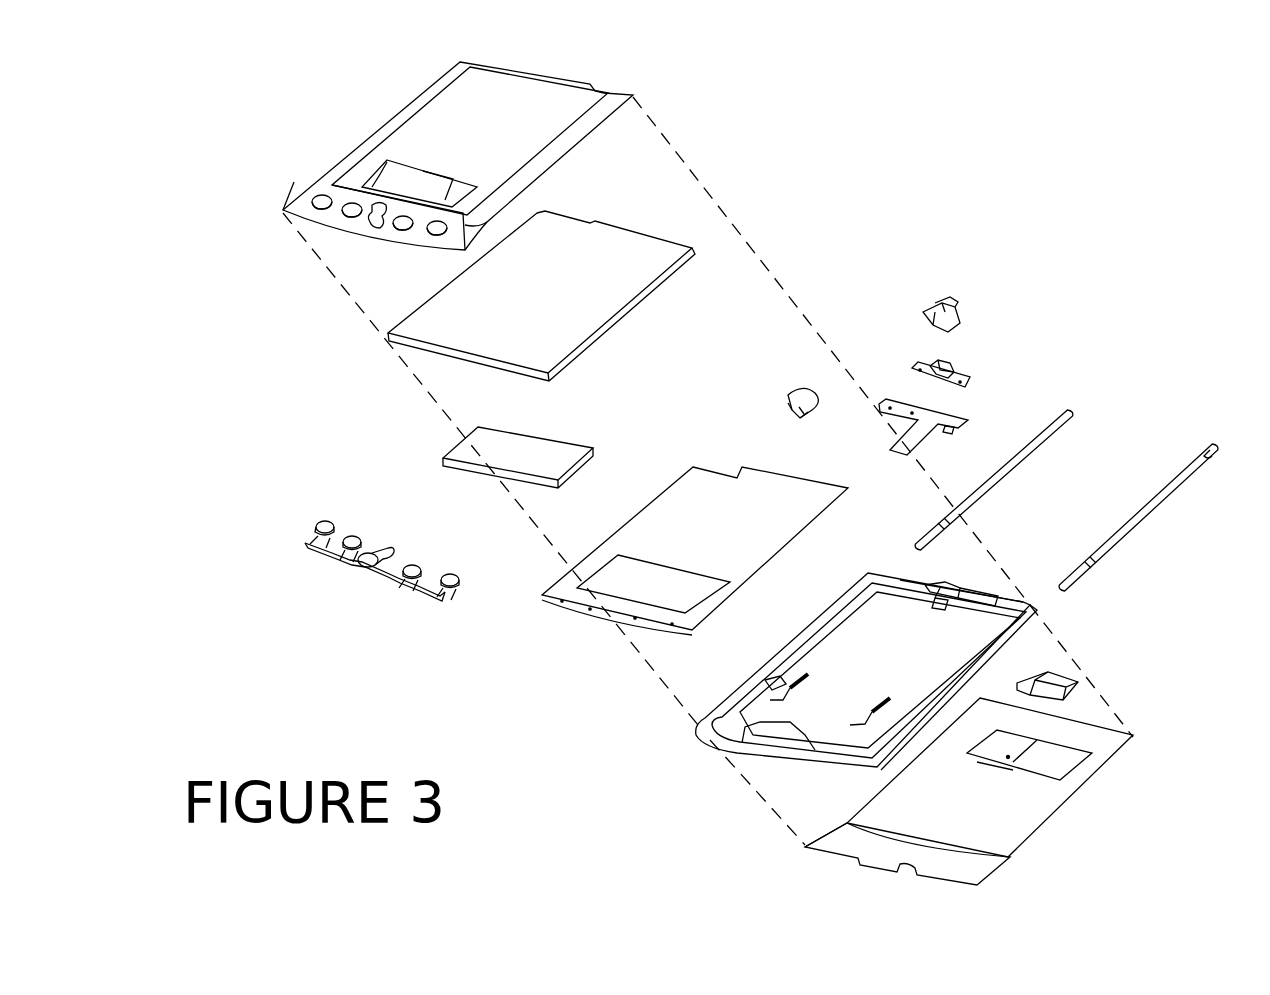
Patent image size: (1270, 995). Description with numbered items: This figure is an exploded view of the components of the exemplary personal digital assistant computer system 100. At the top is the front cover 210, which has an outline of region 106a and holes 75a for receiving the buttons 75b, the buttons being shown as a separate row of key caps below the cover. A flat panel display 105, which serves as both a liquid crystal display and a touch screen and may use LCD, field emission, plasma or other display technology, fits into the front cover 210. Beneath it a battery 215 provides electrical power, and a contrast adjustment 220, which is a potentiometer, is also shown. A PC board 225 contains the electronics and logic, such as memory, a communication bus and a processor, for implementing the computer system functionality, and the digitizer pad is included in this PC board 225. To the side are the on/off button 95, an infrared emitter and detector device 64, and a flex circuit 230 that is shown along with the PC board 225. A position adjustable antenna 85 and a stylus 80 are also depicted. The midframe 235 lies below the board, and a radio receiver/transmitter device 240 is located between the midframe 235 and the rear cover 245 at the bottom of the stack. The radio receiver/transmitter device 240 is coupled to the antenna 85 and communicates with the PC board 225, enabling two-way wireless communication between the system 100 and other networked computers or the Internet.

The personal digital assistant computer system 100 is at (153, 60).
The front cover 210 is at (641, 88).
The outline of region 106a is at (388, 178).
The holes 75a is at (282, 214).
The flat panel display 105 is at (665, 226).
The battery 215 is at (439, 437).
The contrast adjustment 220 is at (786, 379).
The PC board 225 is at (556, 568).
The buttons 75b is at (305, 513).
The on/off button 95 is at (948, 283).
The infrared emitter and detector device 64 is at (980, 362).
The flex circuit 230 is at (976, 413).
The position adjustable antenna 85 is at (1081, 395).
The stylus 80 is at (1196, 498).
The midframe 235 is at (1028, 640).
The radio receiver/transmitter device 240 is at (1093, 689).
The rear cover 245 is at (1096, 803).